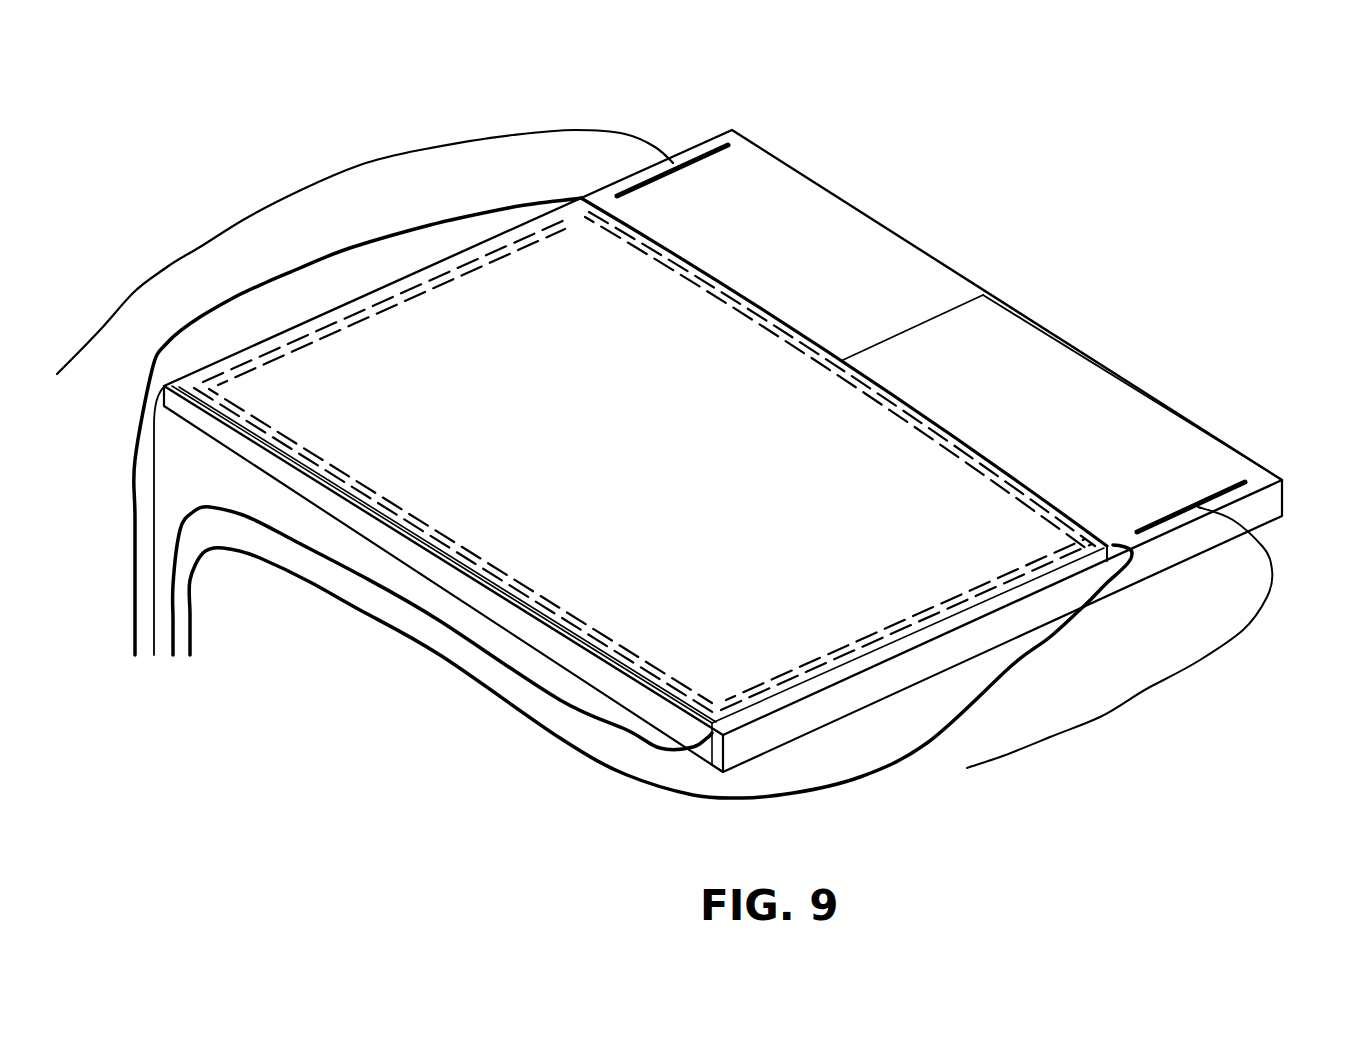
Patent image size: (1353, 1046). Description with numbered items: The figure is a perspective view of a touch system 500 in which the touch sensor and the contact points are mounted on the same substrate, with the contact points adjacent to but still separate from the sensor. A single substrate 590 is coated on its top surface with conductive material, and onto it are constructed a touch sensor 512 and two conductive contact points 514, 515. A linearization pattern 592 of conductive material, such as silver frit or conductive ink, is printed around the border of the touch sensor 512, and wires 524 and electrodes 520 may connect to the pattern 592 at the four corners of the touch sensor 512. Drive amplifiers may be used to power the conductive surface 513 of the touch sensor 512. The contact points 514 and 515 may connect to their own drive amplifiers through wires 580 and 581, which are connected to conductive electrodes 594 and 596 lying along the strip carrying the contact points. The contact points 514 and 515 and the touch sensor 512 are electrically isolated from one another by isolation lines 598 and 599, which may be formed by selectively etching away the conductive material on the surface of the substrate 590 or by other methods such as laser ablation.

The touch system 500 is at (1133, 152).
The touch sensor 512 is at (683, 663).
The conductive surface 513 is at (645, 610).
The contact point 514 is at (812, 232).
The contact point 515 is at (1117, 412).
The electrodes 520 is at (581, 198).
The wires 524 is at (133, 562).
The wire 580 is at (423, 152).
The wire 581 is at (1205, 650).
The substrate 590 is at (533, 643).
The linearization pattern 592 is at (477, 577).
The conductive electrode 594 is at (745, 141).
The conductive electrode 596 is at (1256, 472).
The isolation line 598 is at (918, 333).
The isolation line 599 is at (808, 328).